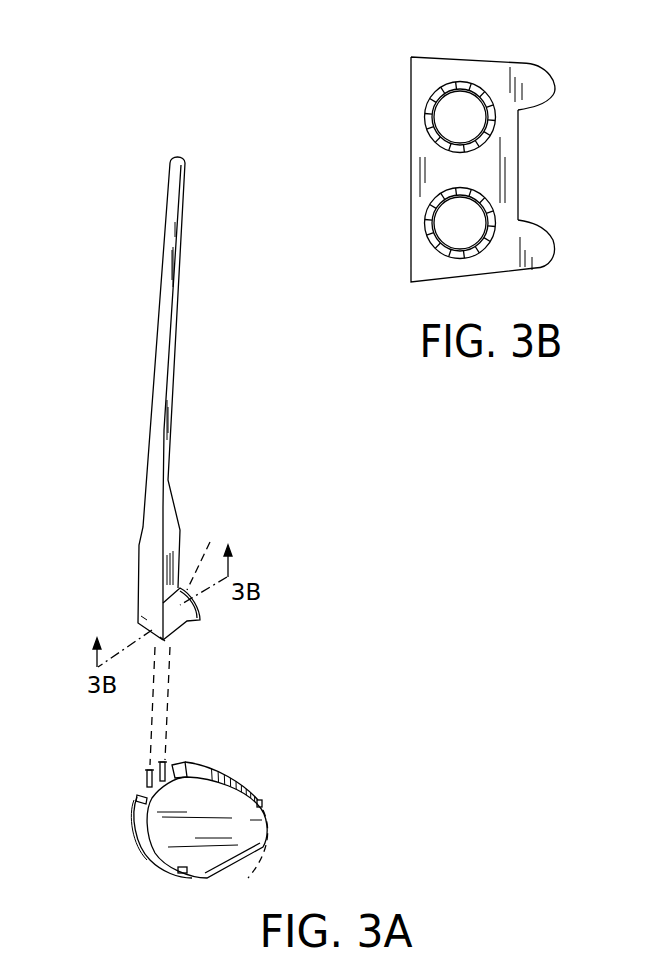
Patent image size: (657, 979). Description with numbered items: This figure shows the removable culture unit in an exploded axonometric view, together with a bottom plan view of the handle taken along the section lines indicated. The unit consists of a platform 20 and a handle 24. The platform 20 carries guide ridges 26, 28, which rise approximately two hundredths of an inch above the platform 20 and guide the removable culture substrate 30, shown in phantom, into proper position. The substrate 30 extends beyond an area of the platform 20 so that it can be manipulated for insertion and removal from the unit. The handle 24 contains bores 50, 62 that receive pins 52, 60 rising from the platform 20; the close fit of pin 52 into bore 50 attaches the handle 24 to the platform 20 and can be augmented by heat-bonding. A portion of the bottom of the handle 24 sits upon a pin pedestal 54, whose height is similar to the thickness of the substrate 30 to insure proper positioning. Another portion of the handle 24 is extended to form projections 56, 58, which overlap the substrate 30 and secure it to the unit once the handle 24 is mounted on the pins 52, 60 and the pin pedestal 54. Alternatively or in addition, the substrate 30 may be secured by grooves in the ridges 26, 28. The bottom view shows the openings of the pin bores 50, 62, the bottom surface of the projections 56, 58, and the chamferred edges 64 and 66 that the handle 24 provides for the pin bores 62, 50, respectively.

In FIG. 3A, the platform 20 is at (190, 878).
In FIG. 3A, the handle 24 is at (170, 388).
In FIG. 3B, the handle 24 is at (418, 63).
In FIG. 3A, the guide ridge 26 is at (227, 772).
In FIG. 3A, the guide ridge 28 is at (148, 845).
In FIG. 3A, the removable culture substrate 30 is at (235, 875).
In FIG. 3A, the bore 50 is at (209, 553).
In FIG. 3B, the bore 50 is at (467, 240).
In FIG. 3A, the pin 52 is at (166, 762).
In FIG. 3A, the pin pedestal 54 is at (143, 790).
In FIG. 3A, the projection 56 is at (187, 620).
In FIG. 3B, the projection 56 is at (543, 245).
In FIG. 3A, the projection 58 is at (167, 640).
In FIG. 3B, the projection 58 is at (550, 83).
In FIG. 3A, the pin 60 is at (145, 775).
In FIG. 3A, the bore 62 is at (141, 617).
In FIG. 3B, the bore 62 is at (438, 110).
In FIG. 3B, the chamferred edge 64 is at (475, 84).
In FIG. 3B, the chamferred edge 66 is at (428, 222).